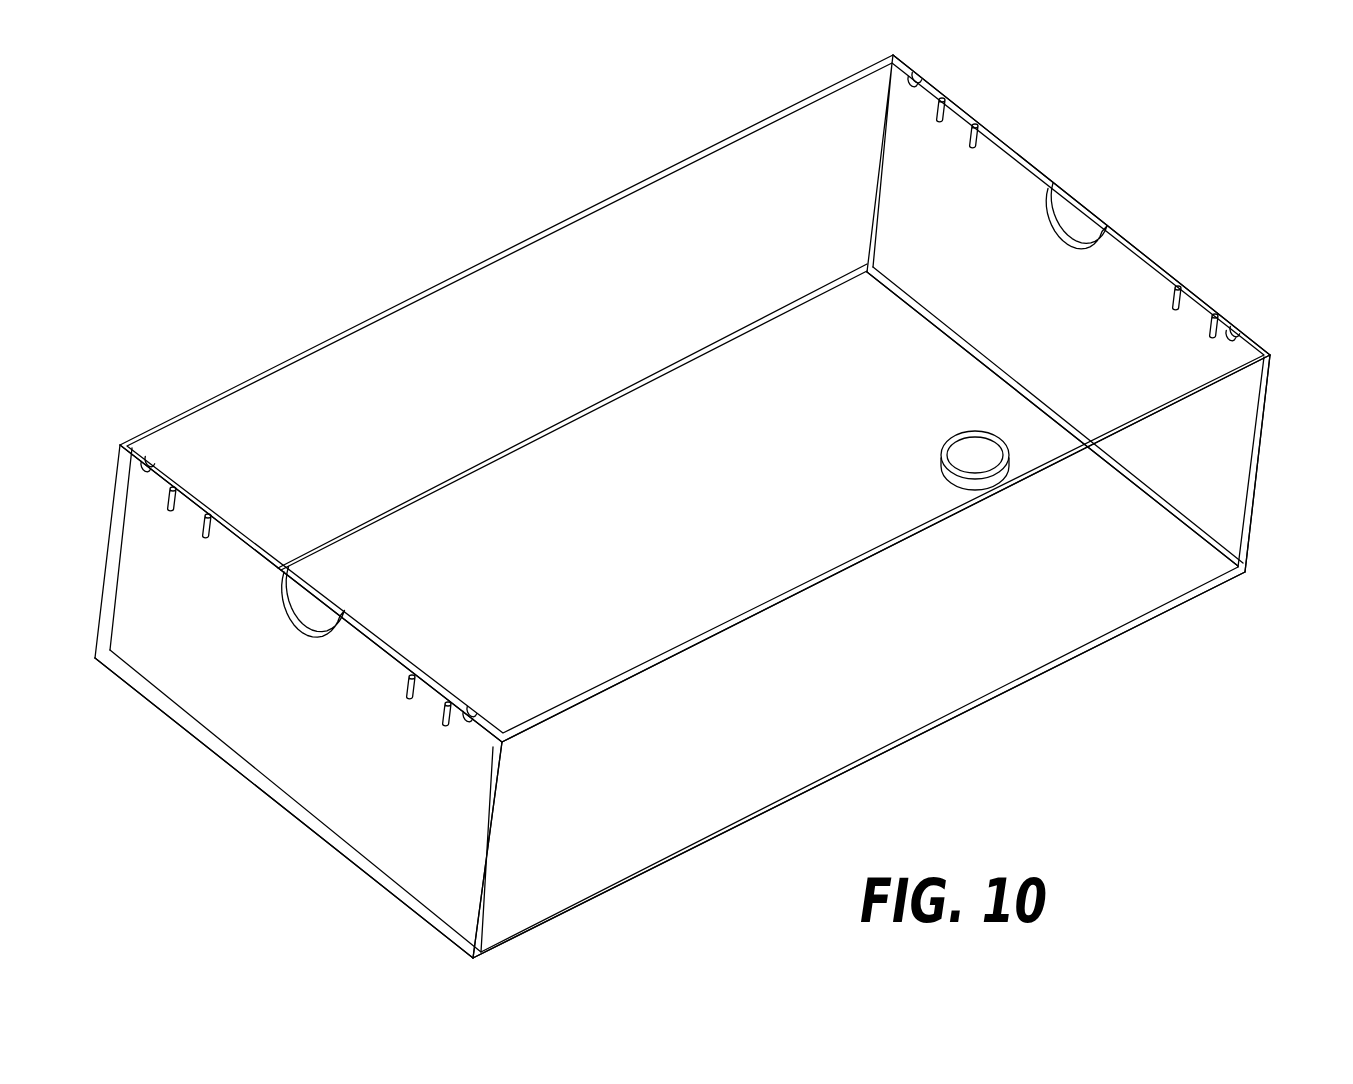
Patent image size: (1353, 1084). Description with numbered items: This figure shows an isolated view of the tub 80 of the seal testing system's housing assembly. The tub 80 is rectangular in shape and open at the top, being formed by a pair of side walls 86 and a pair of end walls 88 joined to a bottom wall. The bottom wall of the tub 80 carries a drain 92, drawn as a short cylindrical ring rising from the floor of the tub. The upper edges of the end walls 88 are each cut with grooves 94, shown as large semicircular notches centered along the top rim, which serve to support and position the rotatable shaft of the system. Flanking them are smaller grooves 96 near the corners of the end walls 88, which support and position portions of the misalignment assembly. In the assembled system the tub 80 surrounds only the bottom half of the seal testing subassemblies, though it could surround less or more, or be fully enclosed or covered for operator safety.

The tub 80 is at (702, 499).
The side walls 86 is at (857, 680).
The end walls 88 is at (437, 816).
The drain 92 is at (960, 432).
The grooves 94 is at (287, 593).
The grooves 96 is at (920, 77).